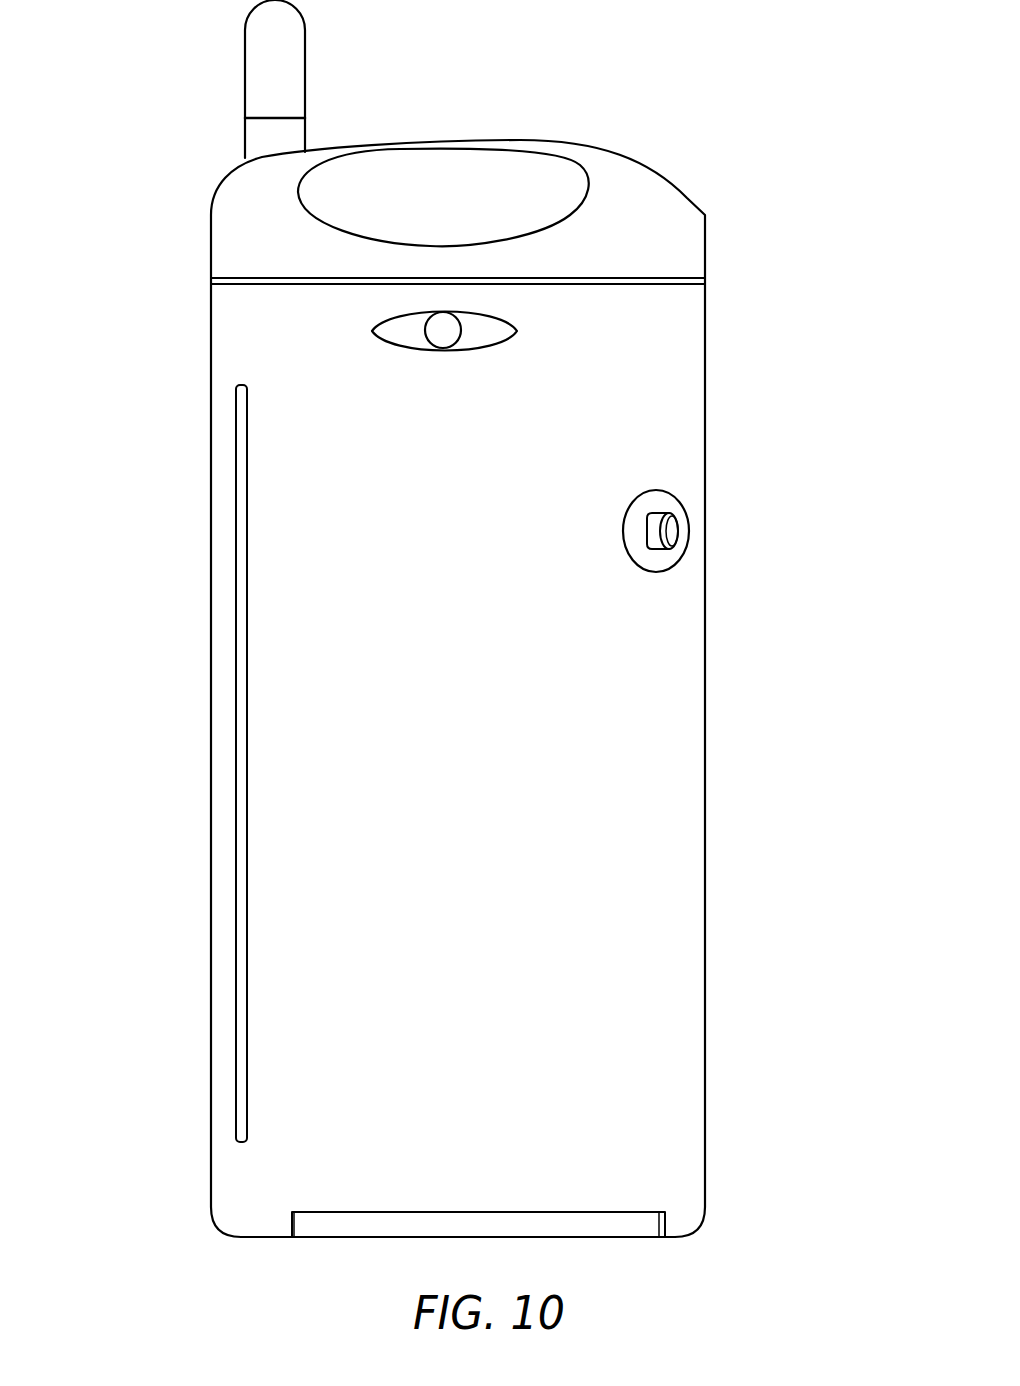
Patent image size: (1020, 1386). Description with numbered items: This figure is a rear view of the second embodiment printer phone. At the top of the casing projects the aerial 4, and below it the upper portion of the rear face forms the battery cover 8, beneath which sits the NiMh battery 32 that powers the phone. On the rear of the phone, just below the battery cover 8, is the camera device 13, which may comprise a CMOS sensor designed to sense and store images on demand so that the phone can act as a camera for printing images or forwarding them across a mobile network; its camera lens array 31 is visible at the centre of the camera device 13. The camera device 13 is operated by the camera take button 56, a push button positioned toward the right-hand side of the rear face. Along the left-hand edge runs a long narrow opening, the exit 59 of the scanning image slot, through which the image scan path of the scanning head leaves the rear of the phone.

The aerial 4 is at (293, 53).
The battery cover 8 is at (518, 660).
The NiMh battery 32 is at (628, 200).
The camera device 13 is at (517, 331).
The camera lens array 31 is at (443, 340).
The camera take button 56 is at (673, 531).
The exit 59 is at (237, 992).